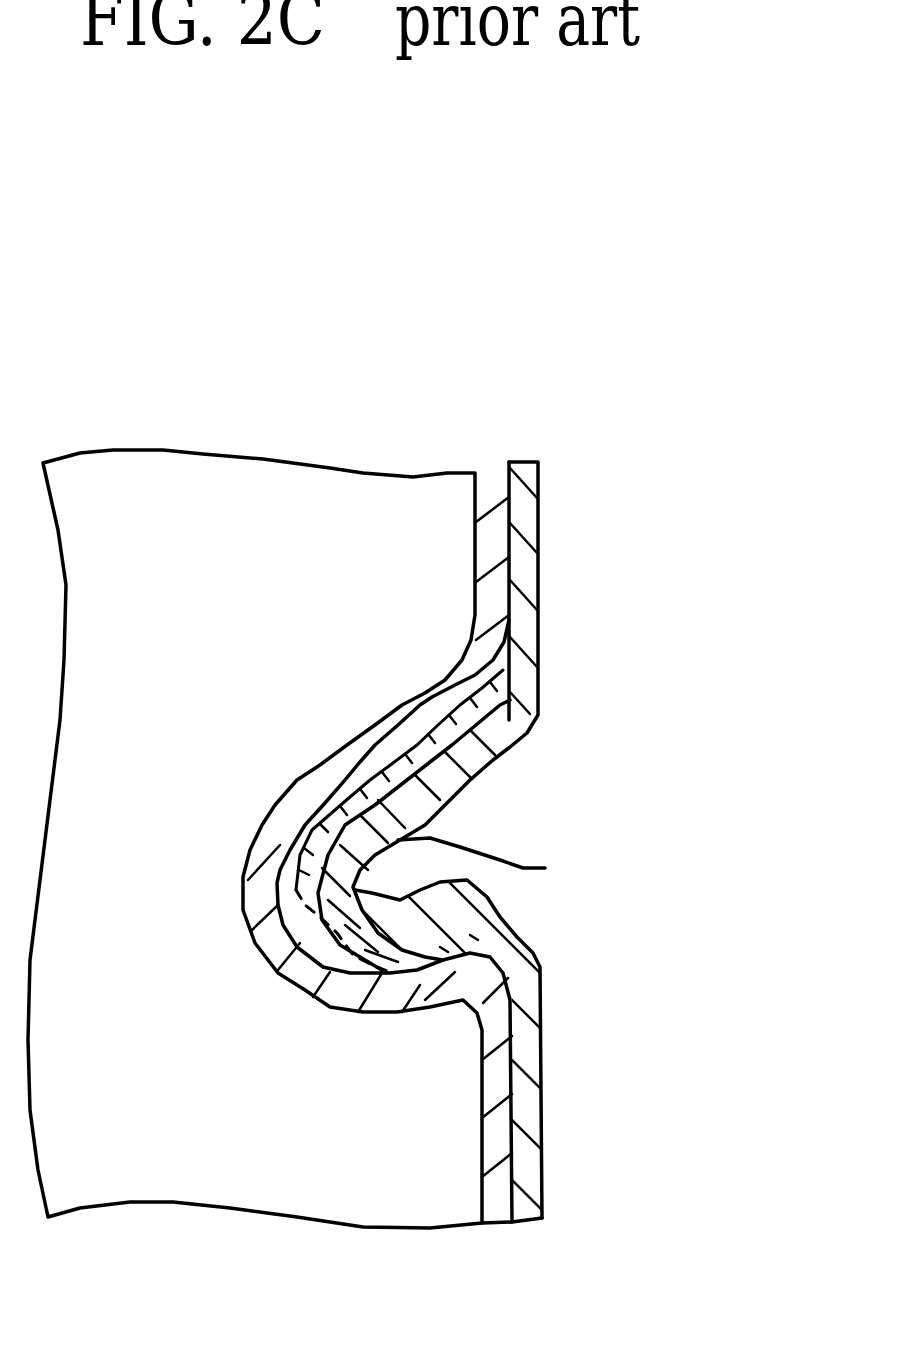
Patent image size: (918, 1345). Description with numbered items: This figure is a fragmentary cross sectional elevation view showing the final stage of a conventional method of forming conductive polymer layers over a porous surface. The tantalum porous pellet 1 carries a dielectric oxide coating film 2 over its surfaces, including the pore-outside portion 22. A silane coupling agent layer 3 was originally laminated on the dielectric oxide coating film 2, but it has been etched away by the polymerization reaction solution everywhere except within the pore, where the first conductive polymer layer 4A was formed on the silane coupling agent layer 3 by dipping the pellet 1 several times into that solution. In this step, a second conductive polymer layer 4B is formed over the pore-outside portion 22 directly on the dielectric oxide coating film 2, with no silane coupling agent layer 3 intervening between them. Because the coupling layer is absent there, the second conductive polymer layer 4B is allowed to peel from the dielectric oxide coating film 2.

The tantalum porous pellet 1 is at (270, 480).
The dielectric oxide coating film 2 is at (500, 478).
The silane coupling agent layer 3 is at (540, 718).
The first conductive polymer layer 4A is at (545, 868).
The second conductive polymer layer 4B is at (538, 578).
The pore-outside portion 22 is at (572, 1101).